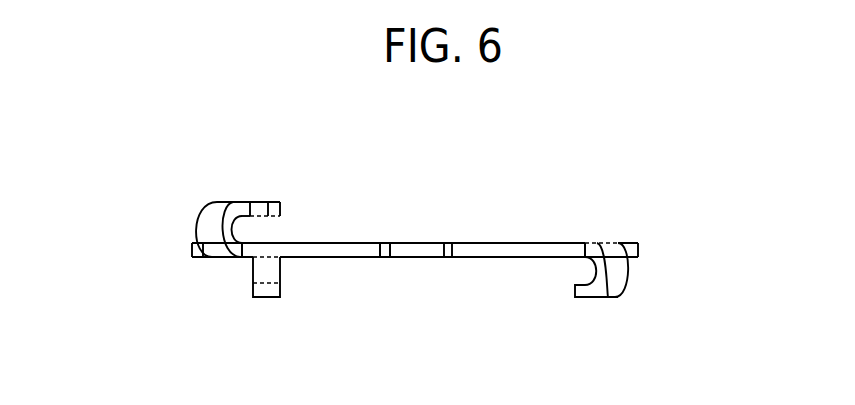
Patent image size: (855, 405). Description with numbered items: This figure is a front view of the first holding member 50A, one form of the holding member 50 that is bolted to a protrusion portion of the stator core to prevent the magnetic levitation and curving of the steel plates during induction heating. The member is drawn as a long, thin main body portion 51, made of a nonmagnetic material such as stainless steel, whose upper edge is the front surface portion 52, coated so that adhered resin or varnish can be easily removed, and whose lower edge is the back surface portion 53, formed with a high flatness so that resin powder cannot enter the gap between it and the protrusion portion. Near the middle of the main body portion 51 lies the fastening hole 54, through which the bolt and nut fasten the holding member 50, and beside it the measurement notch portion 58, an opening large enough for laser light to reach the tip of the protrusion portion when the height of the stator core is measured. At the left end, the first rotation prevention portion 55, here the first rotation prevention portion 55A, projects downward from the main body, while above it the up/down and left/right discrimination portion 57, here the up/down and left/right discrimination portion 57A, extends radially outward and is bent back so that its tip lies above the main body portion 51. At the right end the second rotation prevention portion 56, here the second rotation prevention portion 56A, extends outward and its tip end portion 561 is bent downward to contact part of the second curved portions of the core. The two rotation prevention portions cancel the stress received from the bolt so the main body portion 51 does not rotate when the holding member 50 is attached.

The first holding member 50A is at (461, 234).
The holding member 50 is at (421, 247).
The main body portion 51 is at (524, 240).
The front surface portion 52 is at (324, 243).
The back surface portion 53 is at (325, 257).
The fastening hole 54 is at (380, 243).
The first rotation prevention portion 55A is at (269, 318).
The first rotation prevention portion 55 is at (270, 297).
The second rotation prevention portion 56A is at (570, 312).
The second rotation prevention portion 56 is at (559, 292).
The tip end portion 561 is at (573, 290).
The up/down and left/right discrimination portion 57A is at (259, 184).
The up/down and left/right discrimination portion 57 is at (248, 202).
The measurement notch portion 58 is at (405, 257).